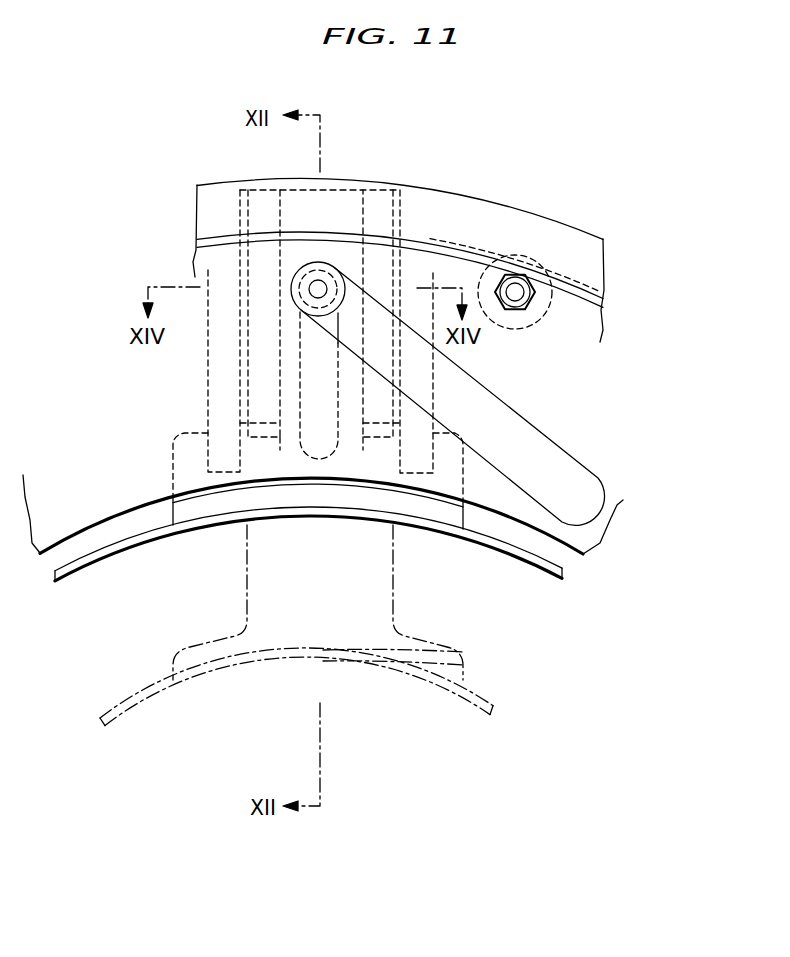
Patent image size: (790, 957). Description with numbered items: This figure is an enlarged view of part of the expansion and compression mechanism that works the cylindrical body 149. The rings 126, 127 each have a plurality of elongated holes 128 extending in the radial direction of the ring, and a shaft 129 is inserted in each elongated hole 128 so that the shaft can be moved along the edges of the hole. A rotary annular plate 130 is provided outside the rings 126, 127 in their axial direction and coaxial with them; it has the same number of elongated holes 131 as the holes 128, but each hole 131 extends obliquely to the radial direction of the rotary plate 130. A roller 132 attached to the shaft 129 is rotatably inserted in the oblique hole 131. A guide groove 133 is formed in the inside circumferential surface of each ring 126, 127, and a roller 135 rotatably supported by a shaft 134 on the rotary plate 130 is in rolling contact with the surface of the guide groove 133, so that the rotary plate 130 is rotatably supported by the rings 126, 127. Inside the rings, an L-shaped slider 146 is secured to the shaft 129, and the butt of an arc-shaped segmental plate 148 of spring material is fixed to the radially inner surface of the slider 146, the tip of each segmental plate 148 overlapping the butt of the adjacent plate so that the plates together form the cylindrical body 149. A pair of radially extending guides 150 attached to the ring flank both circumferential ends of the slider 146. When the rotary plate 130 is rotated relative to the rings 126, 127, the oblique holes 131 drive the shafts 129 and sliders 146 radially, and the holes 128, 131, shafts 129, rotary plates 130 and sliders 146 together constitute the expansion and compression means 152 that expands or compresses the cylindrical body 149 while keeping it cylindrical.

The ring 126 is at (398, 227).
The ring 127 is at (400, 269).
The elongated hole 128 is at (303, 355).
The shaft 129 is at (316, 281).
The rotary annular plate 130 is at (596, 305).
The elongated hole 131 is at (557, 445).
The roller 132 is at (345, 264).
The guide groove 133 is at (452, 239).
The shaft 134 is at (522, 293).
The roller 135 is at (527, 328).
The L-shaped slider 146 is at (307, 498).
The arc-shaped segmental plate 148 is at (181, 537).
The cylindrical body 149 is at (423, 543).
The guide 150 is at (208, 342).
The expansion and compression means 152 is at (588, 375).